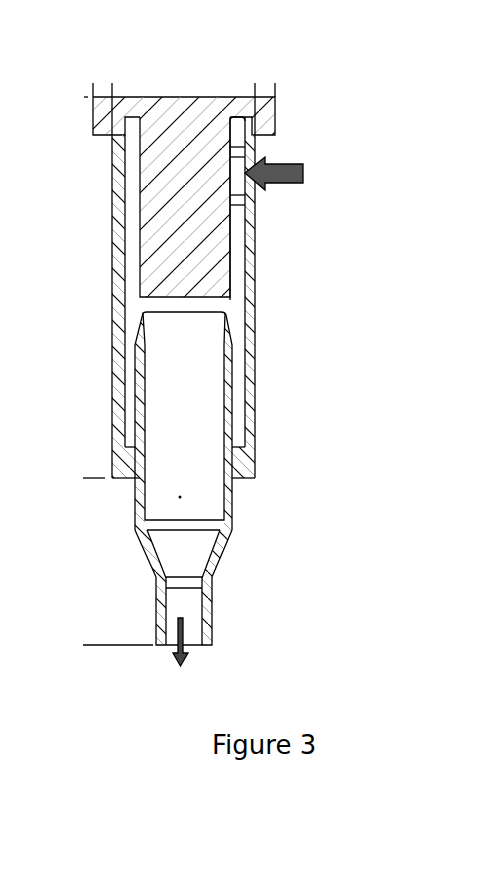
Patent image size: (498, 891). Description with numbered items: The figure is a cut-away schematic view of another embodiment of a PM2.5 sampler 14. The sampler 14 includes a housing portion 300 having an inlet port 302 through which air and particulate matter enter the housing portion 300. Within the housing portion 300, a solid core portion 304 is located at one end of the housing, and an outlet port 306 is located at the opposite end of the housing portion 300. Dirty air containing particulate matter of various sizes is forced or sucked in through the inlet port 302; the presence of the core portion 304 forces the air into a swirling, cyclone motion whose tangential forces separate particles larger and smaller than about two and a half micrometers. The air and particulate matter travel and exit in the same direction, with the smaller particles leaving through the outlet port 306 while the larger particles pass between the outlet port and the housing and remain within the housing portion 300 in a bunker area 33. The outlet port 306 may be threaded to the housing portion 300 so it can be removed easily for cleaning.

The PM2.5 sampler 14 is at (204, 53).
The housing portion 300 is at (254, 234).
The inlet port 302 is at (258, 148).
The solid core portion 304 is at (148, 216).
The bunker area 33 is at (237, 414).
The outlet port 306 is at (193, 610).